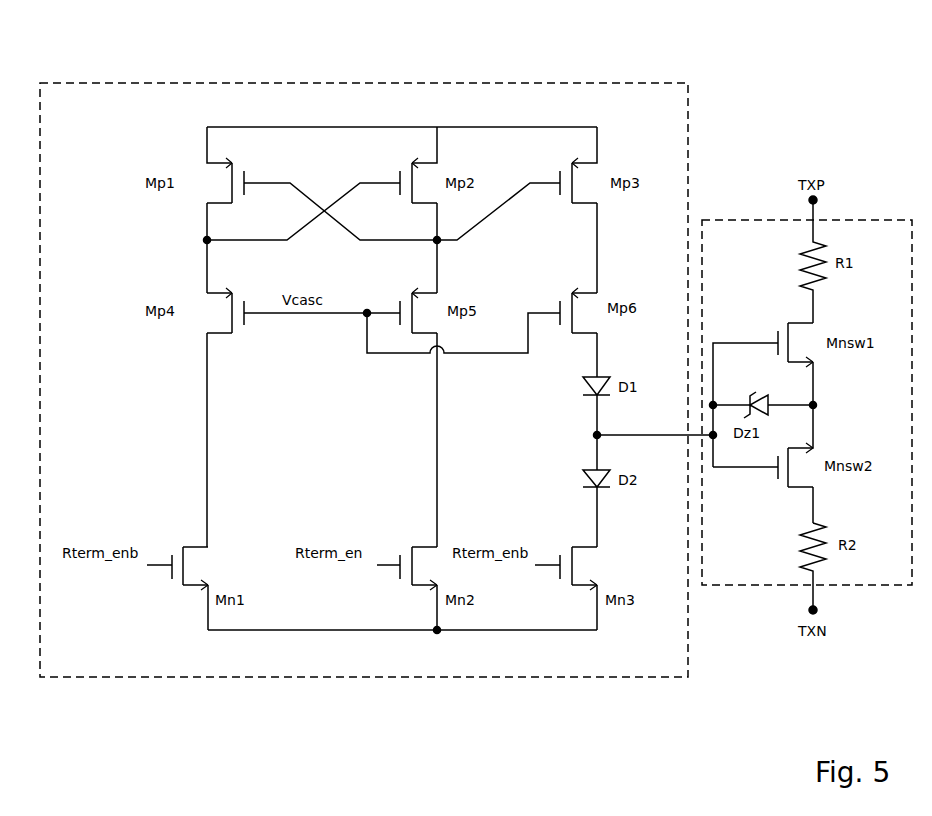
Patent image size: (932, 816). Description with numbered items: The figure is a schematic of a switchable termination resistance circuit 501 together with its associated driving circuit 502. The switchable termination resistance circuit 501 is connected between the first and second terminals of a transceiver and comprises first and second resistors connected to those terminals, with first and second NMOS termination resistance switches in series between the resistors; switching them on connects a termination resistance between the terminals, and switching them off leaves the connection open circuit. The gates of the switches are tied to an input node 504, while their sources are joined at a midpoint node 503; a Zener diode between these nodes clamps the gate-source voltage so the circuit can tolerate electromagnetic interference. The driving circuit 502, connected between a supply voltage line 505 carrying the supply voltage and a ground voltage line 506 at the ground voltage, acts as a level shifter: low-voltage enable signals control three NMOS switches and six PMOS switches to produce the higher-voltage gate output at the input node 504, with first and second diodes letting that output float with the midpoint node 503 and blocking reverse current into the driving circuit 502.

The switchable termination resistance circuit 501 is at (857, 220).
The driving circuit 502 is at (118, 84).
The midpoint node 503 is at (813, 405).
The input node 504 is at (713, 405).
The supply voltage line 505 is at (508, 127).
The ground voltage line 506 is at (267, 631).